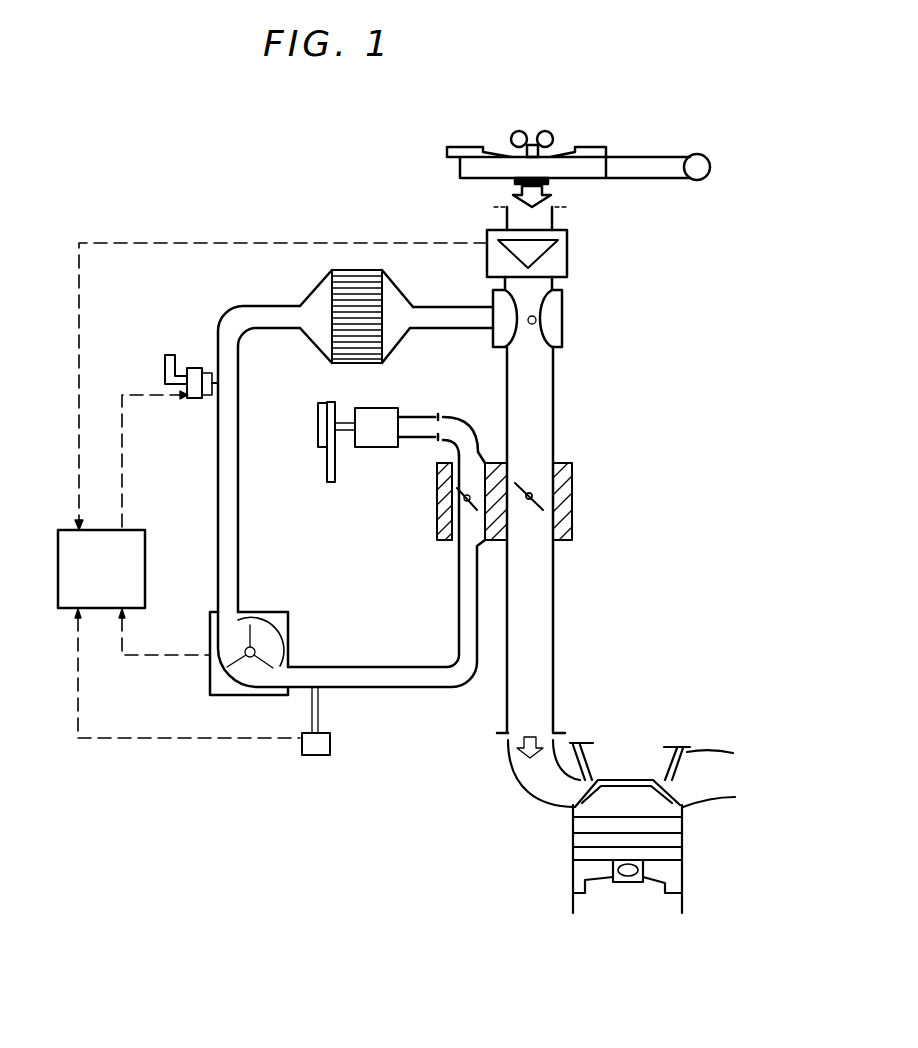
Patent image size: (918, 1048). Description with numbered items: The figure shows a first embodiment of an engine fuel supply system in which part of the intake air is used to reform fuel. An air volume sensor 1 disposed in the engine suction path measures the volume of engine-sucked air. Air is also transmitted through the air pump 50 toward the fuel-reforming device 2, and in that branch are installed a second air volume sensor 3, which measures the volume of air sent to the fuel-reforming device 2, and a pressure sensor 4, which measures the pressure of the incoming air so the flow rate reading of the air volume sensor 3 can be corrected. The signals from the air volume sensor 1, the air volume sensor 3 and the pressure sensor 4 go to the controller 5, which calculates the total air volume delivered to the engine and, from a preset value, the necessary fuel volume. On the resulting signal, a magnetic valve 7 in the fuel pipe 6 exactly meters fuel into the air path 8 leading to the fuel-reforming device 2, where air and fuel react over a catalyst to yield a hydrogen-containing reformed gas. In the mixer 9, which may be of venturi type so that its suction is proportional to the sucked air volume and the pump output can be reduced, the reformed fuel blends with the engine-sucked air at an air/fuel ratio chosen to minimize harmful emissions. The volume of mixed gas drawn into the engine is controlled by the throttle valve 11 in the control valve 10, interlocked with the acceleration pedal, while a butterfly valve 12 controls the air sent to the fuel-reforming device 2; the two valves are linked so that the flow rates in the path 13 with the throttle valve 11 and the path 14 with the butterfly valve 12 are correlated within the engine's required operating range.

The air volume sensor 1 is at (568, 245).
The fuel-reforming device 2 is at (357, 270).
The air volume sensor 3 is at (290, 612).
The pressure sensor 4 is at (331, 740).
The controller 5 is at (62, 528).
The fuel pipe 6 is at (166, 352).
The magnetic valve 7 is at (195, 400).
The air path 8 is at (240, 433).
The mixer 9 is at (505, 340).
The control valve 10 is at (620, 501).
The throttle valve 11 is at (532, 511).
The butterfly valve 12 is at (471, 505).
The path 13 is at (525, 480).
The path 14 is at (462, 470).
The air pump 50 is at (388, 408).